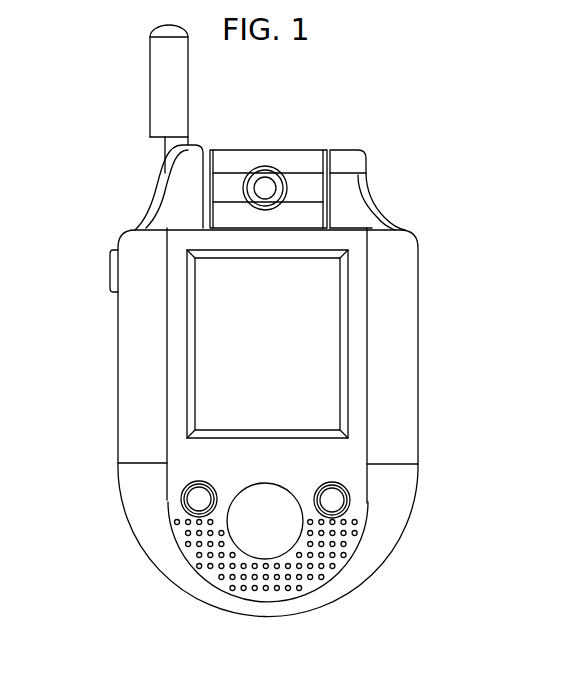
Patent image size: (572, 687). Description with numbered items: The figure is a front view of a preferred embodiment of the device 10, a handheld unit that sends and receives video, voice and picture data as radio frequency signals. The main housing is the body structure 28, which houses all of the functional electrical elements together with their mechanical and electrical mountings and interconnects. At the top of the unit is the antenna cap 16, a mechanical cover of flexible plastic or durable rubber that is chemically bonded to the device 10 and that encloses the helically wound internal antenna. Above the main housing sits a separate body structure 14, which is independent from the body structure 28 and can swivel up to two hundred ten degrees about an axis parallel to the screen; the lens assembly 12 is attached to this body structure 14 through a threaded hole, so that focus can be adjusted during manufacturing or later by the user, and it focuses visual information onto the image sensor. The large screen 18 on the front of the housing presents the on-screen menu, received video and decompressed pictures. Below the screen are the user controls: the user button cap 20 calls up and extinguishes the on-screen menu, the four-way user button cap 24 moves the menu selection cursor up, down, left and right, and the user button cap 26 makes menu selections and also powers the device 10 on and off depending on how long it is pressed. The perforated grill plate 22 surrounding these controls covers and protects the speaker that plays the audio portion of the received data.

The device 10 is at (363, 140).
The lens assembly 12 is at (277, 169).
The body structure 14 is at (243, 150).
The antenna cap 16 is at (150, 68).
The display 18 is at (215, 385).
The user button cap 20 is at (181, 498).
The perforated grill plate 22 is at (199, 564).
The four-way user button cap 24 is at (250, 556).
The user button cap 26 is at (350, 497).
The body structure 28 is at (418, 377).